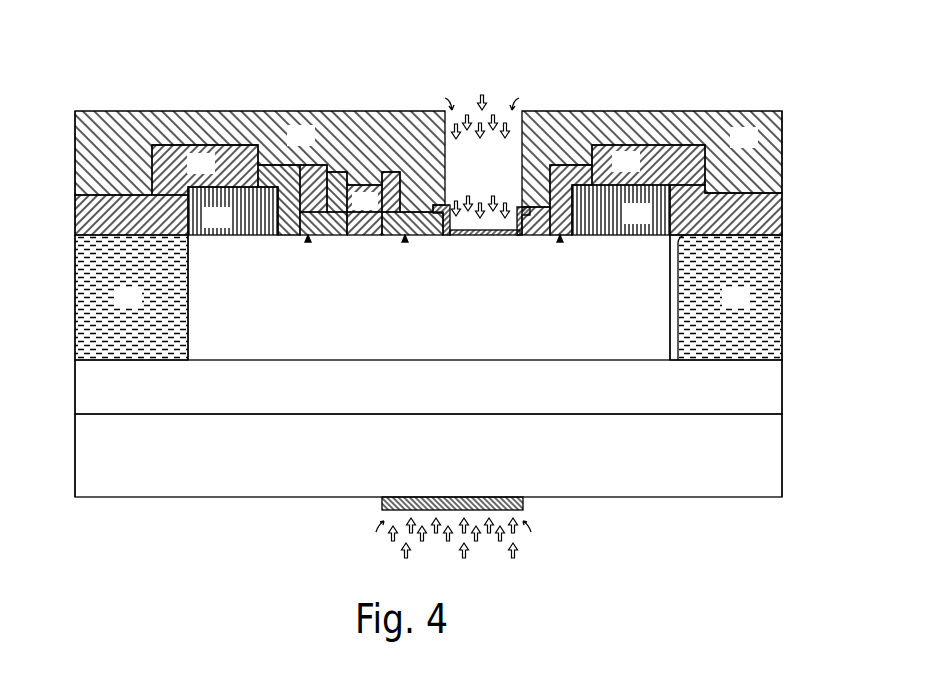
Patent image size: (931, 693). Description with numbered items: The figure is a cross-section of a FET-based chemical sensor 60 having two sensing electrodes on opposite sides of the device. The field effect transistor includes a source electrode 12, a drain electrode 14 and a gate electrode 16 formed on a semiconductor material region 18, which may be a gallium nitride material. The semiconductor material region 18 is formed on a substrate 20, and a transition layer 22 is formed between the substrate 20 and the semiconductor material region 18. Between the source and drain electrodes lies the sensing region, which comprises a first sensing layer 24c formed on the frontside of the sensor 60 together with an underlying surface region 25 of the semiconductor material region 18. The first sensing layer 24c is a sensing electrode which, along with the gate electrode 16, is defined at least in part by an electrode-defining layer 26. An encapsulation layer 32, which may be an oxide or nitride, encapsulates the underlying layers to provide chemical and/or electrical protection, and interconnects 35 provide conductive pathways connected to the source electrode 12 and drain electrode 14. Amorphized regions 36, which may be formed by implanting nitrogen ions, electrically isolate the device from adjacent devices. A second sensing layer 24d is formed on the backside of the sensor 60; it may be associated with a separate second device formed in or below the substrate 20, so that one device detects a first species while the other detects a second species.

The semiconductor device-based sensor 60 is at (757, 92).
The encapsulation layer 32 is at (314, 144).
The interconnects 35 is at (214, 172).
The source electrode 12 is at (229, 226).
The drain electrode 14 is at (649, 222).
The gate electrode 16 is at (363, 192).
The electrode-defining layer 26 is at (308, 241).
The first sensing layer 24c is at (452, 238).
The surface region 25 is at (499, 257).
The amorphized regions 36 is at (141, 307).
The semiconductor material region 18 is at (688, 297).
The transition layer 22 is at (238, 395).
The substrate 20 is at (238, 464).
The second sensing layer 24d is at (382, 500).